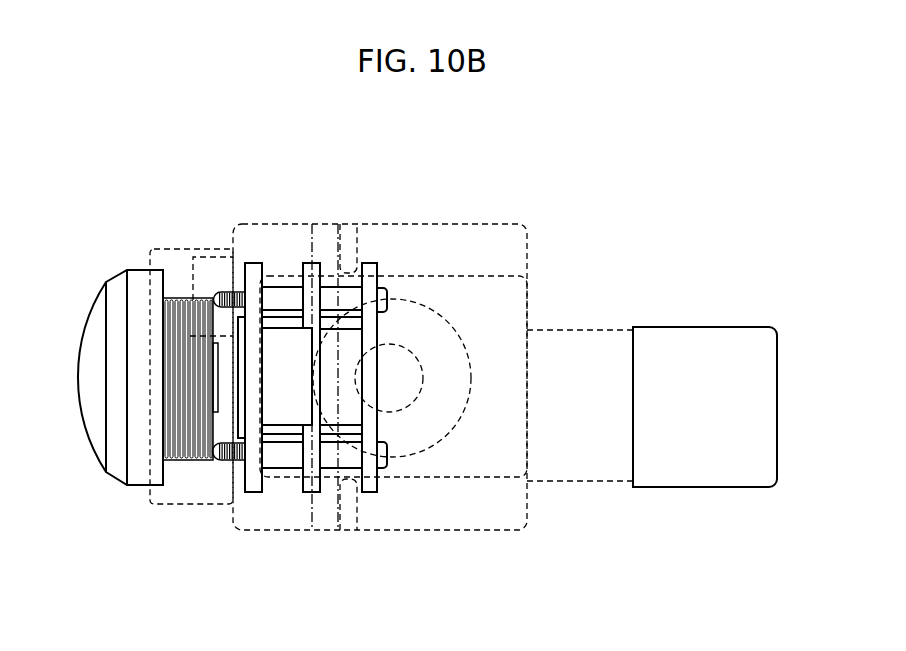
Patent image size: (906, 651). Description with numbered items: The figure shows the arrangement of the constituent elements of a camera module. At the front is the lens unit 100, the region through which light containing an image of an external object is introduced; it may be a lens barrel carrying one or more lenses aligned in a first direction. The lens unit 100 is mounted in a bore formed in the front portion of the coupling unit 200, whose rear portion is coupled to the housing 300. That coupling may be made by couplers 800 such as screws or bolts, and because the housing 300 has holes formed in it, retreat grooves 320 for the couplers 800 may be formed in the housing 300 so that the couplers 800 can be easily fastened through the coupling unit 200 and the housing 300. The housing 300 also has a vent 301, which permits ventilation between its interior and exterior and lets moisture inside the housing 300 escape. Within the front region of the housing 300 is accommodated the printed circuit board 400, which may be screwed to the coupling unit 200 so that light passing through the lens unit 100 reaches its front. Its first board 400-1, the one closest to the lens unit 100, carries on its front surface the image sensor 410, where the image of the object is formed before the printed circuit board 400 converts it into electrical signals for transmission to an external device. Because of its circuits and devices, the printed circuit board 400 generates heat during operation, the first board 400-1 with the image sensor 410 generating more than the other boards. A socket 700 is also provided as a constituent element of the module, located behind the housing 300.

The lens unit 100 is at (139, 288).
The coupling unit 200 is at (192, 485).
The housing 300 is at (445, 530).
The vent 301 is at (392, 377).
The retreat groove 320 is at (498, 253).
The printed circuit board 400 is at (285, 383).
The first board 400-1 is at (255, 275).
The image sensor 410 is at (238, 328).
The socket 700 is at (702, 350).
The coupler 800 is at (348, 240).